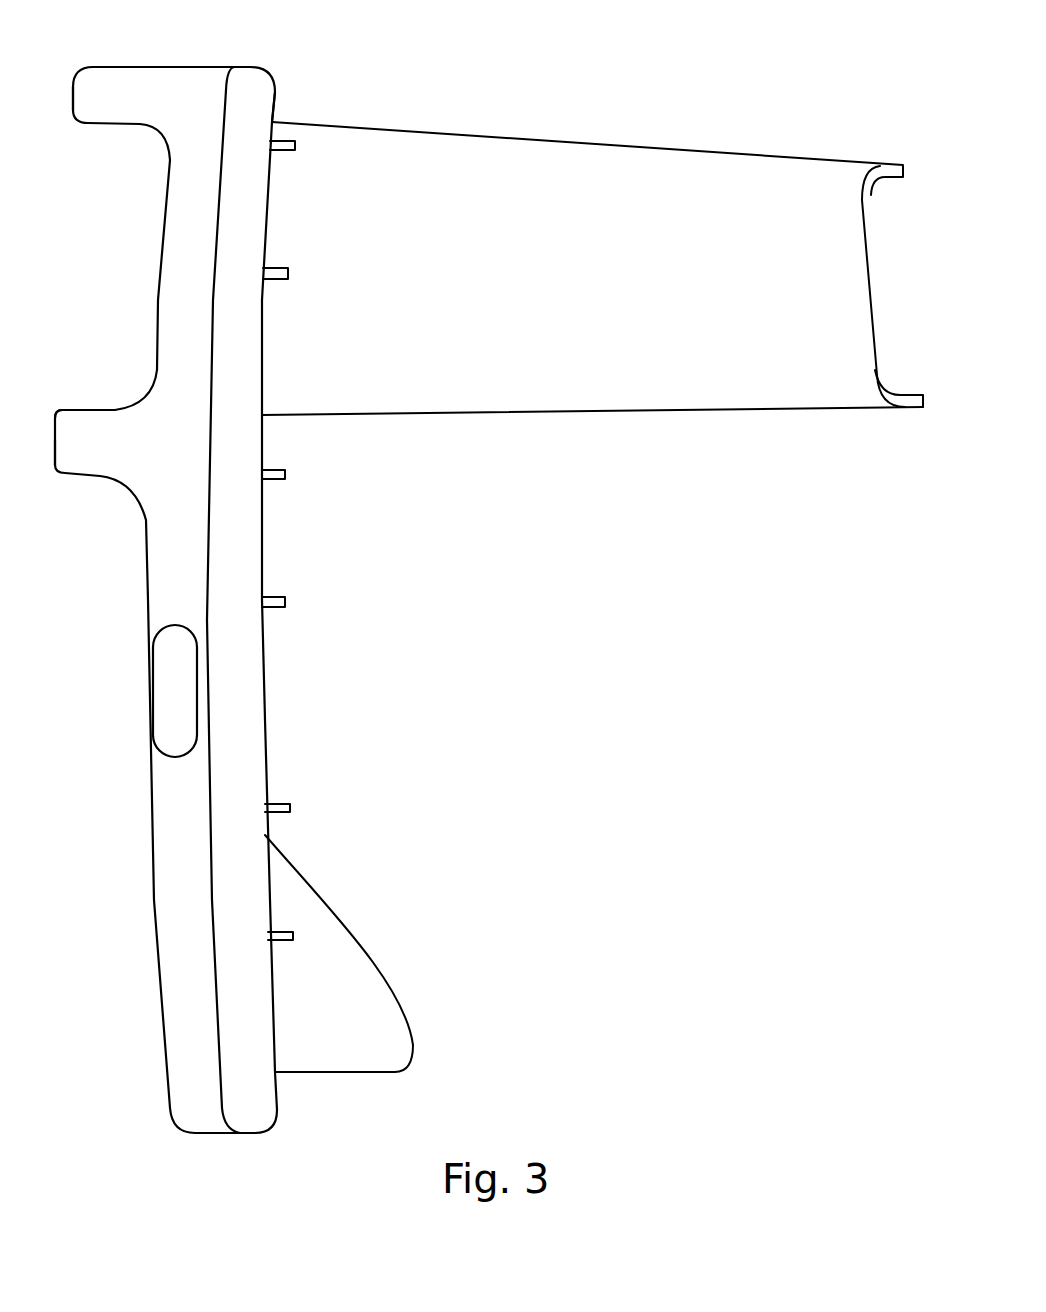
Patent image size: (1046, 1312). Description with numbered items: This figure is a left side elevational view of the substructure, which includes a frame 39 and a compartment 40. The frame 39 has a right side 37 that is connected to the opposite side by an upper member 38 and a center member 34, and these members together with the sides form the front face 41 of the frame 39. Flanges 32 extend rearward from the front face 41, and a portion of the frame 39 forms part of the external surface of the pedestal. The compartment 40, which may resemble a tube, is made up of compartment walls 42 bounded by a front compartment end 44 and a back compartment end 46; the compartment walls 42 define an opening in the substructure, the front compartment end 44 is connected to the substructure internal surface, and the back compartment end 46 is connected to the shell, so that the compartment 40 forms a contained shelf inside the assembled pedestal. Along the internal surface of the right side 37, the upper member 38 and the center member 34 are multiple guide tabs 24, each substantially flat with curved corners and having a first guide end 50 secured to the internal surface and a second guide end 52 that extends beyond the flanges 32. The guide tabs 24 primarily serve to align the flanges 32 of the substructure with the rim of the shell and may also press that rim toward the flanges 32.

The guide tab 24 is at (280, 268).
The flange 32 is at (248, 653).
The center member 34 is at (64, 452).
The right side 37 is at (163, 577).
The upper member 38 is at (83, 98).
The frame 39 is at (152, 95).
The compartment 40 is at (646, 386).
The front face 41 is at (47, 412).
The compartment wall 42 is at (748, 378).
The front compartment end 44 is at (272, 122).
The back compartment end 46 is at (905, 168).
The first guide end 50 is at (265, 804).
The second guide end 52 is at (290, 812).